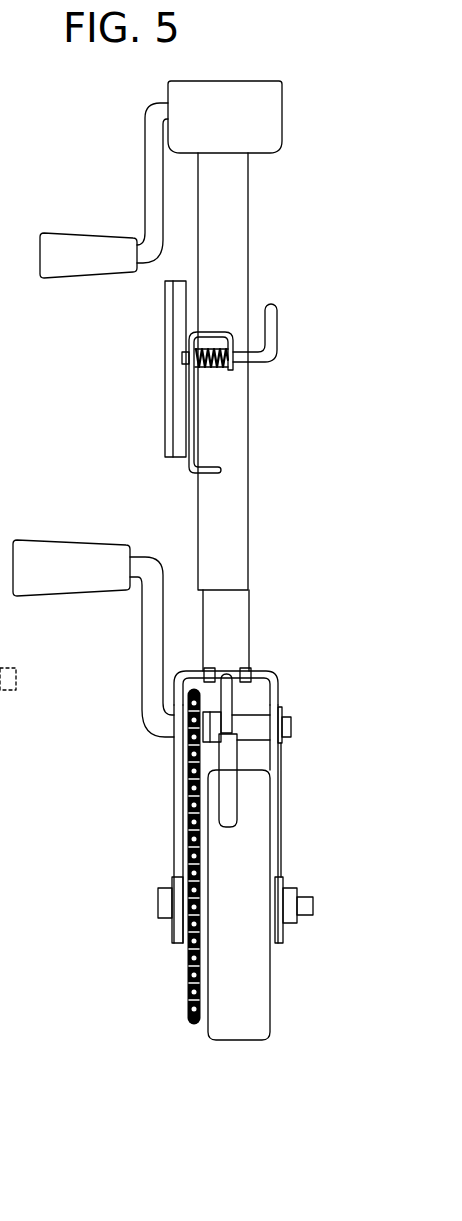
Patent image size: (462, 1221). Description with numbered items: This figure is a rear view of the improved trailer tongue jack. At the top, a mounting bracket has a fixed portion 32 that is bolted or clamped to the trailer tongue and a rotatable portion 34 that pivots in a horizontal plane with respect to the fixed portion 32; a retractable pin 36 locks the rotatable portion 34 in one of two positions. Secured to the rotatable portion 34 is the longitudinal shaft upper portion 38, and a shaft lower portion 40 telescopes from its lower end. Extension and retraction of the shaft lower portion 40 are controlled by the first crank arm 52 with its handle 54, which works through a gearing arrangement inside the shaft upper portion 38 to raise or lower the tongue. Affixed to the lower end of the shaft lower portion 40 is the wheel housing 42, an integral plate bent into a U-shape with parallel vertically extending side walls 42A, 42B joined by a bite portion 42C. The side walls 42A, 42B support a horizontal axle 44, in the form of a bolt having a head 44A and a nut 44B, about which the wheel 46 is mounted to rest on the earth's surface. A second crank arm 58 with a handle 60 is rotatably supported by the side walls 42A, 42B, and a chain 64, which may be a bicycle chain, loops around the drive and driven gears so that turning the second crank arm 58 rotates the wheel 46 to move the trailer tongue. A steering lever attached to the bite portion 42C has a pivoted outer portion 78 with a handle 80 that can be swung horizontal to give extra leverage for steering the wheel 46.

The fixed portion 32 is at (178, 372).
The rotatable portion 34 is at (193, 422).
The retractable pin 36 is at (280, 321).
The shaft upper portion 38 is at (242, 452).
The shaft lower portion 40 is at (240, 600).
The wheel housing 42 is at (200, 767).
The side wall 42A is at (175, 757).
The side wall 42B is at (279, 765).
The bite portion 42C is at (255, 668).
The horizontal axle 44 is at (306, 904).
The head 44A is at (157, 915).
The nut 44B is at (290, 892).
The wheel 46 is at (248, 1030).
The first crank arm 52 is at (150, 180).
The handle 54 is at (92, 278).
The second crank arm 58 is at (150, 625).
The handle 60 is at (72, 553).
The chain 64 is at (192, 820).
The pivoted outer portion 78 is at (223, 707).
The handle 80 is at (230, 800).